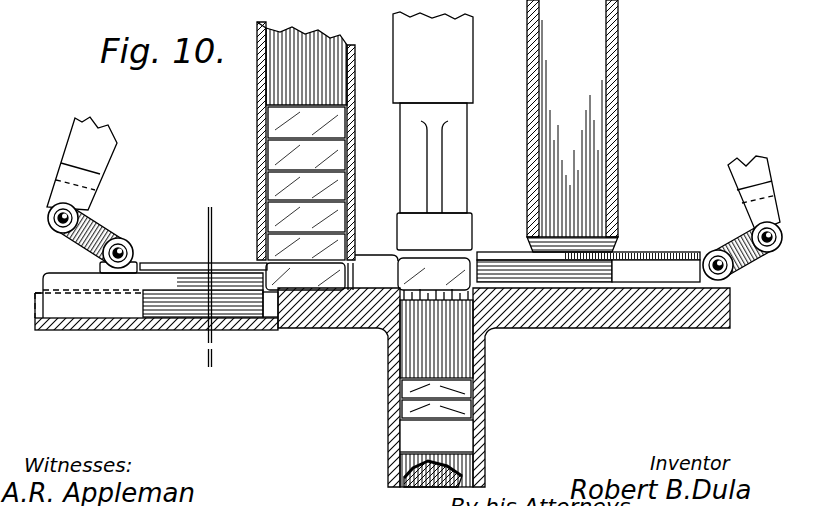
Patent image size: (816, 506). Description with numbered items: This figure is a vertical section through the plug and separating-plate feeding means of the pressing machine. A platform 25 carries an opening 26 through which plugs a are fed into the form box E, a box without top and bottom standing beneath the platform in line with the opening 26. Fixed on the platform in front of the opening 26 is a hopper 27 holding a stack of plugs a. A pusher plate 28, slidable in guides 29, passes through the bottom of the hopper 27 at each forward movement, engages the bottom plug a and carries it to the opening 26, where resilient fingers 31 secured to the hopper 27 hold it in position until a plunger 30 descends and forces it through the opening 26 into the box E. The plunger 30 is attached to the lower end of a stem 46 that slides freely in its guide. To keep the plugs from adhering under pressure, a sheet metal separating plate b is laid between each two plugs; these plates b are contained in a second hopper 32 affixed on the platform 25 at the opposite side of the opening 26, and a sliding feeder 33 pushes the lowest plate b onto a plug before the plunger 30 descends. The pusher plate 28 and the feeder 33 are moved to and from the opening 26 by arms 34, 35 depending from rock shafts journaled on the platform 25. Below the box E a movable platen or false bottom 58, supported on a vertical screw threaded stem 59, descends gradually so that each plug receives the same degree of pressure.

The platform 25 is at (589, 313).
The opening 26 is at (448, 318).
The hopper 27 is at (258, 158).
The pusher plate 28 is at (173, 277).
The guides 29 is at (226, 300).
The plunger 30 is at (434, 196).
The resilient fingers 31 is at (378, 267).
The hopper 32 is at (572, 126).
The sliding feeder 33 is at (676, 258).
The arm 34 is at (74, 133).
The arm 35 is at (742, 165).
The stem 46 is at (433, 57).
The platen 58 is at (457, 435).
The screw threaded stem 59 is at (457, 463).
The form box E is at (390, 397).
The plug a is at (383, 281).
The separating plate b is at (448, 258).